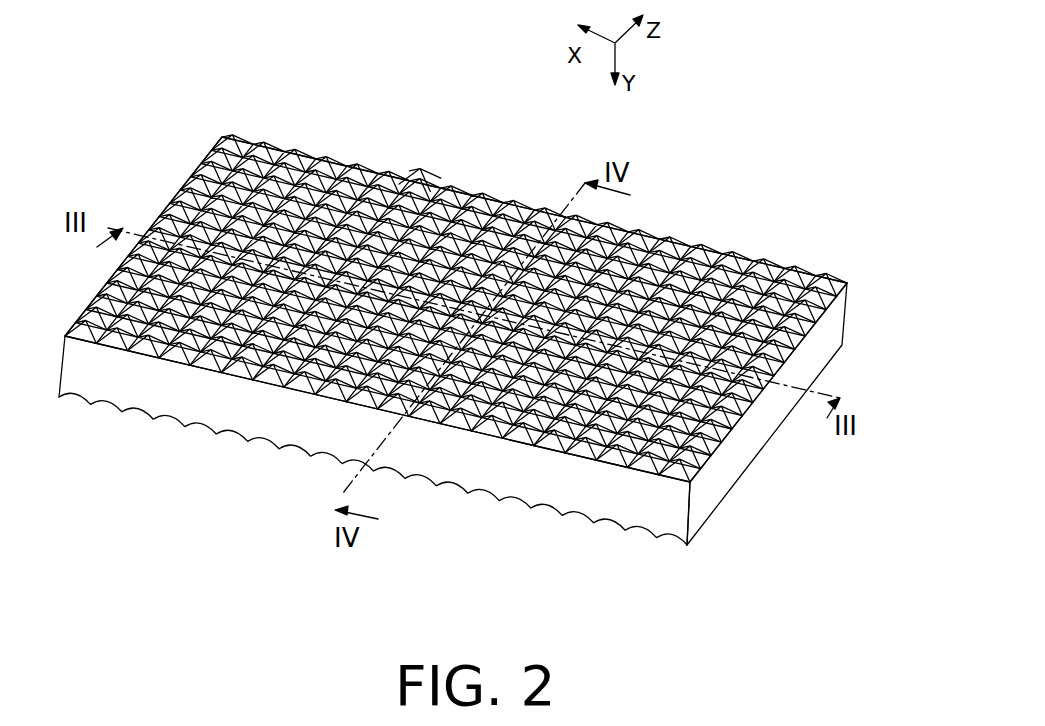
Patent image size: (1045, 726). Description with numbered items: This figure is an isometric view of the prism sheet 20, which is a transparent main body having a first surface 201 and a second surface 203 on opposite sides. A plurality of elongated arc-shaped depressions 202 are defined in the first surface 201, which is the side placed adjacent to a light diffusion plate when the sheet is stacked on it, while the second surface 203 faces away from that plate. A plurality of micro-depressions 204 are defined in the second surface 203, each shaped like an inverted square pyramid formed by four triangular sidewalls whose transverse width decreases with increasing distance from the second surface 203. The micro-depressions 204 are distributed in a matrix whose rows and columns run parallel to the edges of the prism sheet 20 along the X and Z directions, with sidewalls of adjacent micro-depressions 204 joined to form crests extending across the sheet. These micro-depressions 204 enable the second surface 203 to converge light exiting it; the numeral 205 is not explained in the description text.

The prism sheet 20 is at (371, 114).
The first surface 201 is at (500, 506).
The elongated arc-shaped depressions 202 is at (640, 527).
The second surface 203 is at (727, 251).
The micro-depressions 204 is at (794, 280).
The microstructure apex 205 is at (421, 176).